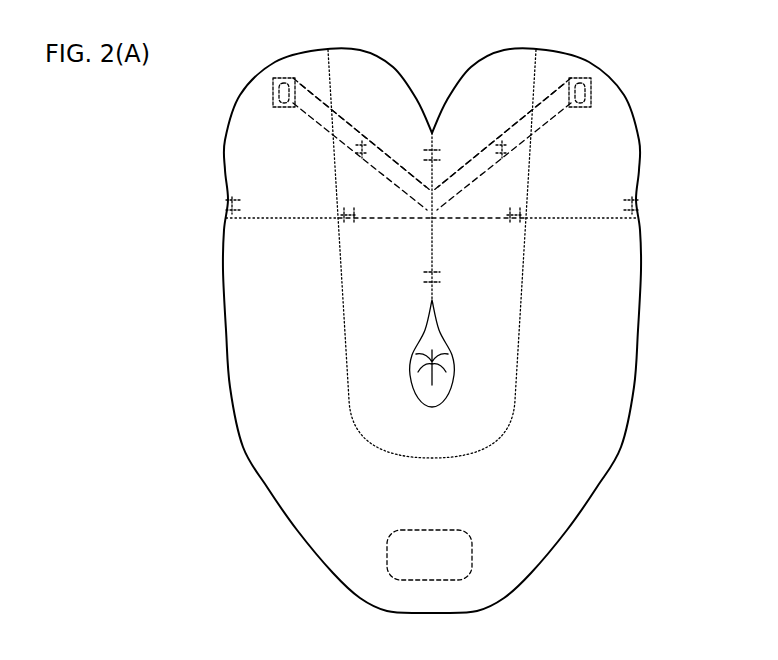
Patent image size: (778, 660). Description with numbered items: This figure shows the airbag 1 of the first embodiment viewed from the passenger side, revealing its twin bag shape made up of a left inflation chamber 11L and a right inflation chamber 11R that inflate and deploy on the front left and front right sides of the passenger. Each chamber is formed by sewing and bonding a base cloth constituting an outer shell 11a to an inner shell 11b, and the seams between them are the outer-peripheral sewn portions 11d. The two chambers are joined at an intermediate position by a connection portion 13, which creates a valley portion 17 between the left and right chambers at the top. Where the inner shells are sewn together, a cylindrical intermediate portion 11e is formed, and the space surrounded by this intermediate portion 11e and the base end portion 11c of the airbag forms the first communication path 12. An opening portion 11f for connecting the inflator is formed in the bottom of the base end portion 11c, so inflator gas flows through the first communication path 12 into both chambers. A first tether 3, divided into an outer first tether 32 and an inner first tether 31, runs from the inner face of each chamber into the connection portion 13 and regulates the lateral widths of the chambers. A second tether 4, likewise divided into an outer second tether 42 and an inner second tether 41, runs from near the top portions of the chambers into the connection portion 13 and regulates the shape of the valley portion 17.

The airbag 1 is at (154, 371).
The first tether 3 is at (312, 239).
The second tether 4 is at (343, 164).
The outer shell 11a is at (263, 328).
The inner shell 11b is at (357, 101).
The base end portion 11c is at (334, 515).
The outer-peripheral sewn portion 11d is at (348, 318).
The intermediate portion 11e is at (449, 381).
The opening portion 11f is at (419, 563).
The right inflation chamber 11R is at (222, 266).
The left inflation chamber 11L is at (641, 266).
The first communication path 12 is at (545, 523).
The connection portion 13 is at (436, 277).
The valley portion 17 is at (510, 37).
The inner first tether 31 is at (387, 220).
The outer first tether 32 is at (261, 221).
The inner second tether 41 is at (397, 164).
The outer second tether 42 is at (302, 113).